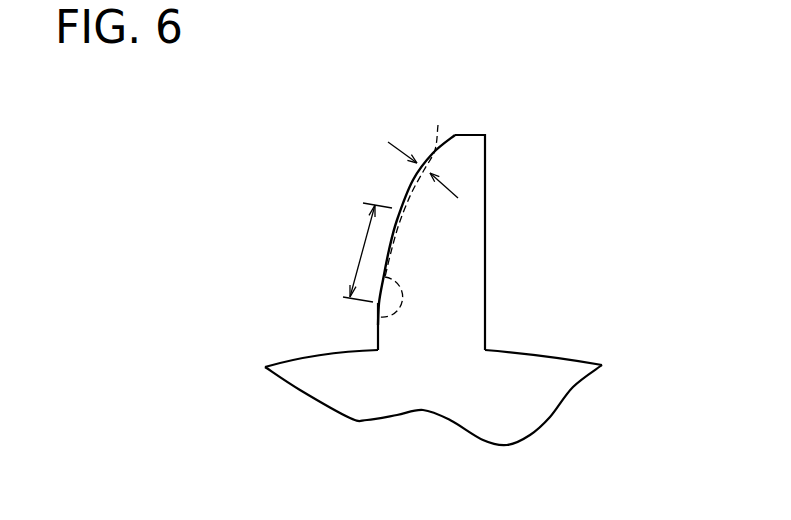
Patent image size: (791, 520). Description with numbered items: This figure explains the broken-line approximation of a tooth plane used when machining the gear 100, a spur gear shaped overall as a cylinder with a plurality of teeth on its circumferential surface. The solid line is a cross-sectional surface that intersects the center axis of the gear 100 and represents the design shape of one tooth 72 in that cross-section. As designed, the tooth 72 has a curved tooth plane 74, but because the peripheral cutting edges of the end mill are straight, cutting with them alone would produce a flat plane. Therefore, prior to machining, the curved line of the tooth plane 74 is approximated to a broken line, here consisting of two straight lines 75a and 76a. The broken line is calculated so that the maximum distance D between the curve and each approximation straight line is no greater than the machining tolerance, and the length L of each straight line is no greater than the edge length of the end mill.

The gear 100 is at (573, 347).
The tooth 72 is at (462, 235).
The tooth plane 74 is at (413, 182).
The straight line 75a is at (438, 125).
The straight line 76a is at (378, 318).